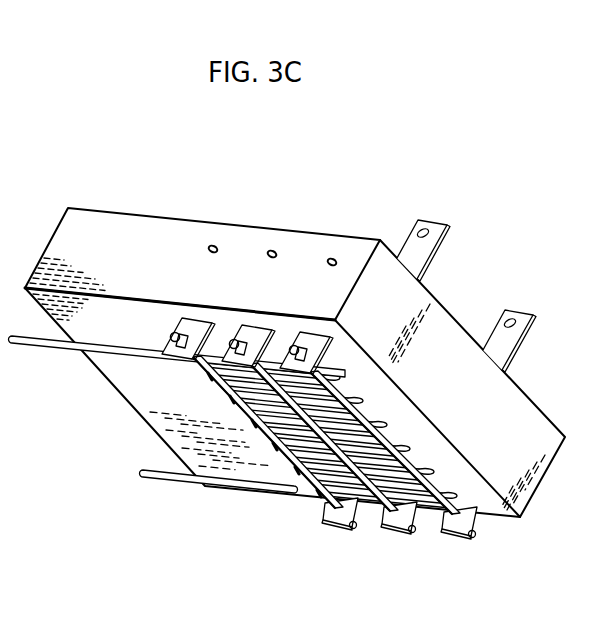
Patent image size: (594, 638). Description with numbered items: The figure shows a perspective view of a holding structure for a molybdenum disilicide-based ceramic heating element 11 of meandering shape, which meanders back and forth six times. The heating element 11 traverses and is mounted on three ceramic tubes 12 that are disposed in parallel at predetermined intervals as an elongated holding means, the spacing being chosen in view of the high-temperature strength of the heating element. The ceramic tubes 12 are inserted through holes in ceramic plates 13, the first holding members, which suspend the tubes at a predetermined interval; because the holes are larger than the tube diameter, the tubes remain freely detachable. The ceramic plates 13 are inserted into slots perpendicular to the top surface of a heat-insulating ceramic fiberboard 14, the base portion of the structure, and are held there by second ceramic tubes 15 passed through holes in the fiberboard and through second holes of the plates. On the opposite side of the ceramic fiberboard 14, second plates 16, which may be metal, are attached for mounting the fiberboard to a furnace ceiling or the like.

The heating element 11 is at (178, 480).
The ceramic tube 12 is at (380, 511).
The ceramic plate 13 is at (186, 318).
The ceramic fiberboard 14 is at (107, 240).
The second ceramic tube 15 is at (270, 251).
The second plate 16 is at (412, 253).